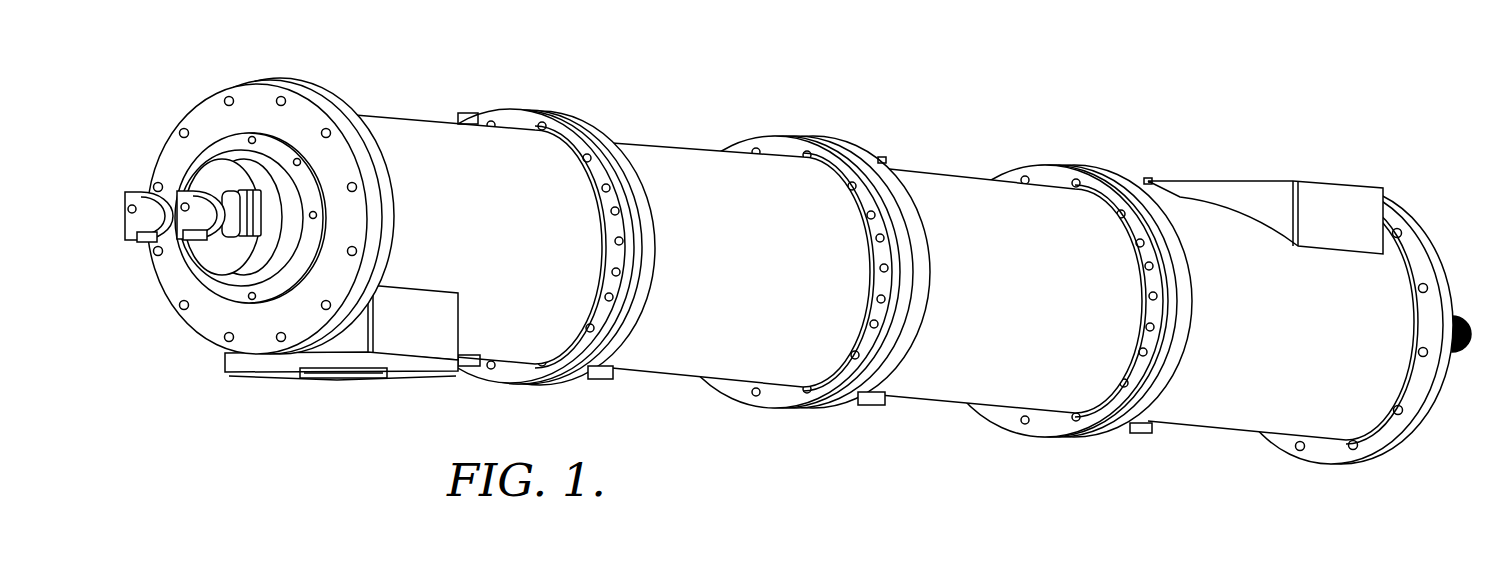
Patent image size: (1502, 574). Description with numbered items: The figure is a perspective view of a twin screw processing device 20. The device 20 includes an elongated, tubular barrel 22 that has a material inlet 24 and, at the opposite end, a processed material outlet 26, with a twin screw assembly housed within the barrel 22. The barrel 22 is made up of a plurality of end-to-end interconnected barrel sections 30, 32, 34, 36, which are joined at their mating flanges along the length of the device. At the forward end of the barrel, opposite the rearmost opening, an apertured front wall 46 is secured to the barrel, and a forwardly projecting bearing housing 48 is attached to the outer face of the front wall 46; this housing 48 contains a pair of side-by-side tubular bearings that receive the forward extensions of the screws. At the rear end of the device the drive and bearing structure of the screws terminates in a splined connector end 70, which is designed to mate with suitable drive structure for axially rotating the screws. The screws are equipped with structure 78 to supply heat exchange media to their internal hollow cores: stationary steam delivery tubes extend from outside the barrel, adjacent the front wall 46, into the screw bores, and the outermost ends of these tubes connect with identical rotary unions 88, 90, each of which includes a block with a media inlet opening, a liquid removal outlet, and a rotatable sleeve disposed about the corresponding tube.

The processing device 20 is at (785, 283).
The tubular barrel 22 is at (930, 410).
The material inlet 24 is at (1268, 180).
The processed material outlet 26 is at (342, 379).
The barrel section 30 is at (1231, 418).
The barrel section 32 is at (975, 391).
The barrel section 34 is at (715, 163).
The barrel section 36 is at (399, 128).
The apertured front wall 46 is at (222, 327).
The bearing housing 48 is at (288, 197).
The splined connector end 70 is at (1468, 352).
The heat exchange media supply structure 78 is at (159, 170).
The rotary union 88 is at (200, 253).
The rotary union 90 is at (121, 256).